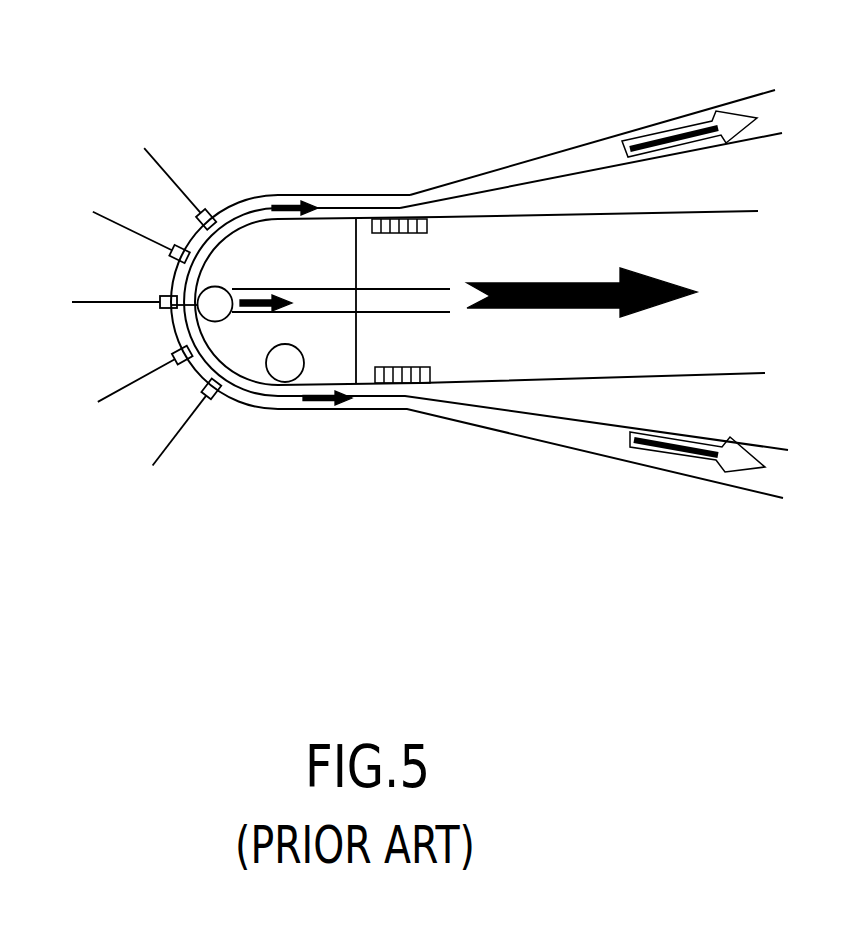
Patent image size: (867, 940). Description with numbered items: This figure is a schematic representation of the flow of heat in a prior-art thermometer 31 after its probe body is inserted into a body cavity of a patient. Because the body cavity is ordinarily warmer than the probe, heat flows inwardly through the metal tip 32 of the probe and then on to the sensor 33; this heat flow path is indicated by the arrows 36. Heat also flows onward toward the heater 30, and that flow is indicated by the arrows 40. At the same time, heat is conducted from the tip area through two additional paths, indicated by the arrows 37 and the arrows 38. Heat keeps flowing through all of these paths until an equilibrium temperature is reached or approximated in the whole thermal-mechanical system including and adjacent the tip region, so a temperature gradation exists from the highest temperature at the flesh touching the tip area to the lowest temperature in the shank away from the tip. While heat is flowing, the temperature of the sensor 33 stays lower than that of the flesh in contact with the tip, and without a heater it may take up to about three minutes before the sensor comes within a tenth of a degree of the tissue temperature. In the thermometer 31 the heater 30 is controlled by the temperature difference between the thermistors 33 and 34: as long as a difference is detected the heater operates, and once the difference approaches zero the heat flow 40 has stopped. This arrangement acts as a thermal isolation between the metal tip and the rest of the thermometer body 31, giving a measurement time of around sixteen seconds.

The heater 30 is at (400, 195).
The thermometer 31 is at (547, 137).
The tip 32 is at (325, 193).
The sensor 33 is at (216, 306).
The thermistor 34 is at (297, 383).
The arrows 36 is at (173, 175).
The arrows 37 is at (688, 127).
The arrows 38 is at (568, 307).
The arrows 40 is at (252, 290).